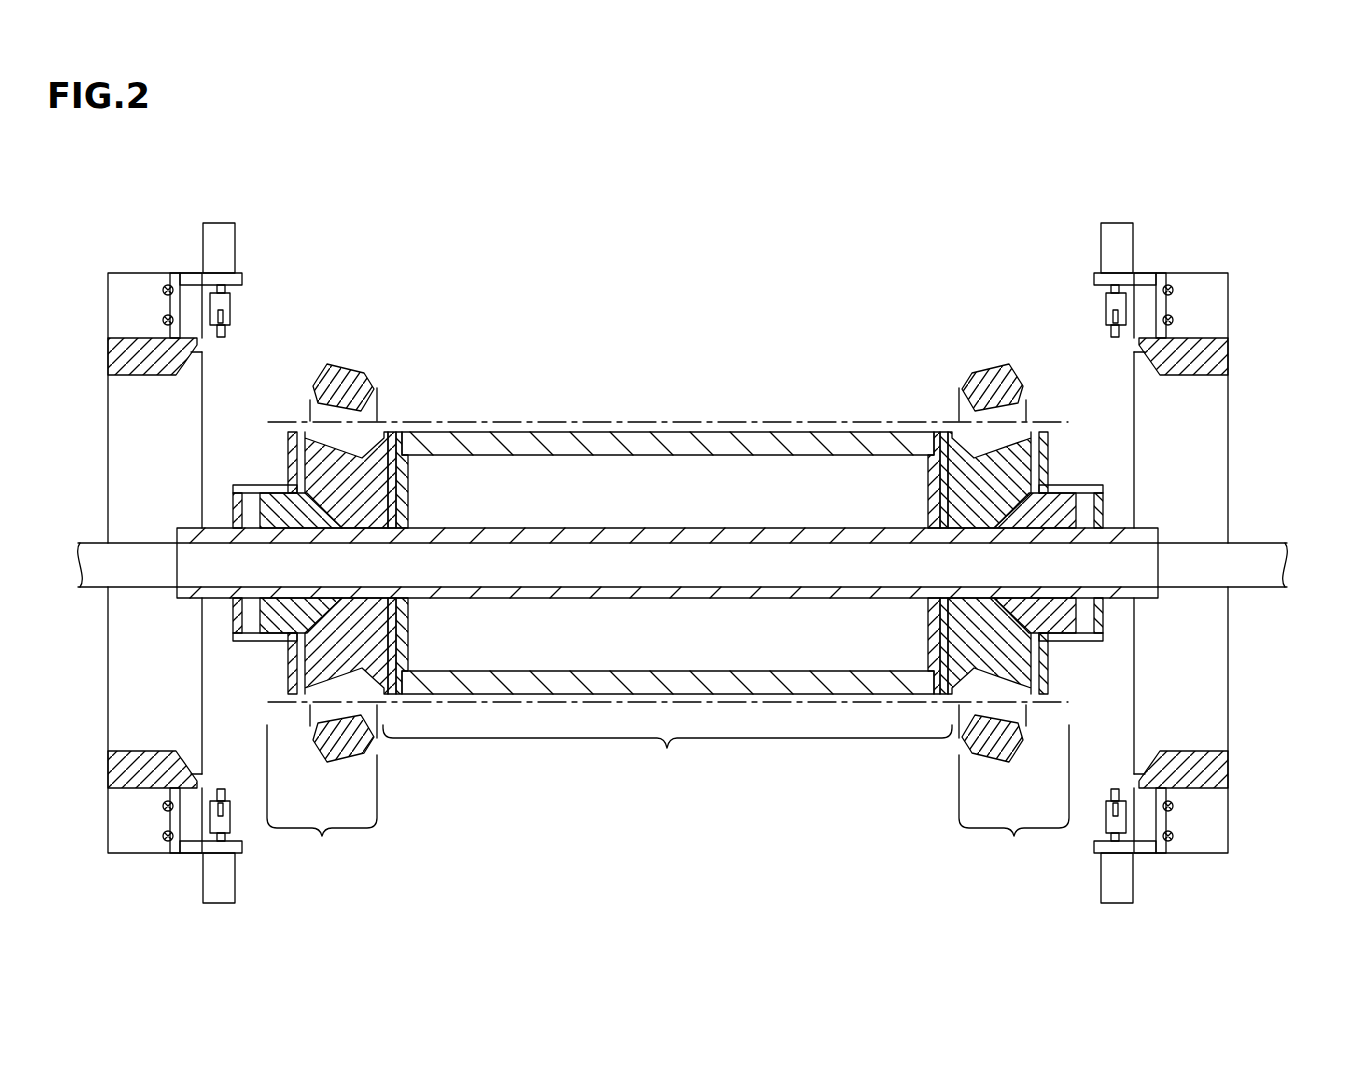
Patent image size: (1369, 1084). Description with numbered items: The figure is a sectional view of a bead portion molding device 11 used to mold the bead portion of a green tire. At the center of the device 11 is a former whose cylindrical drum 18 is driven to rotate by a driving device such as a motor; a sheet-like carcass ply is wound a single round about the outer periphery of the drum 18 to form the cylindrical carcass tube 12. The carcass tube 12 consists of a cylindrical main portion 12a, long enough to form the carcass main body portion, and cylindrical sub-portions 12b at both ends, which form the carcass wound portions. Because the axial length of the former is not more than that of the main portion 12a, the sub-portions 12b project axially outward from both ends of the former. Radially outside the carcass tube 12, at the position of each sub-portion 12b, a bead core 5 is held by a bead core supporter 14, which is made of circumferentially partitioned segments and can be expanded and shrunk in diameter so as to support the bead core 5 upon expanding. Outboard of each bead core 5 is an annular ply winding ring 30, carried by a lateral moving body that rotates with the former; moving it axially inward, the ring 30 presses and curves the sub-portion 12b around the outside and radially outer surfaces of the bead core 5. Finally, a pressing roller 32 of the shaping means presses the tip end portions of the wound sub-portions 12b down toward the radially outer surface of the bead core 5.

The molding device 11 is at (1247, 289).
The carcass tube 12 is at (598, 422).
The cylindrical main portion 12a is at (667, 758).
The cylindrical sub-portion 12b is at (668, 797).
The cylindrical drum 18 is at (703, 450).
The bead core supporter 14 is at (1010, 445).
The bead core 5 is at (983, 372).
The ply winding ring 30 is at (1205, 360).
The pressing roller 32 is at (1108, 320).